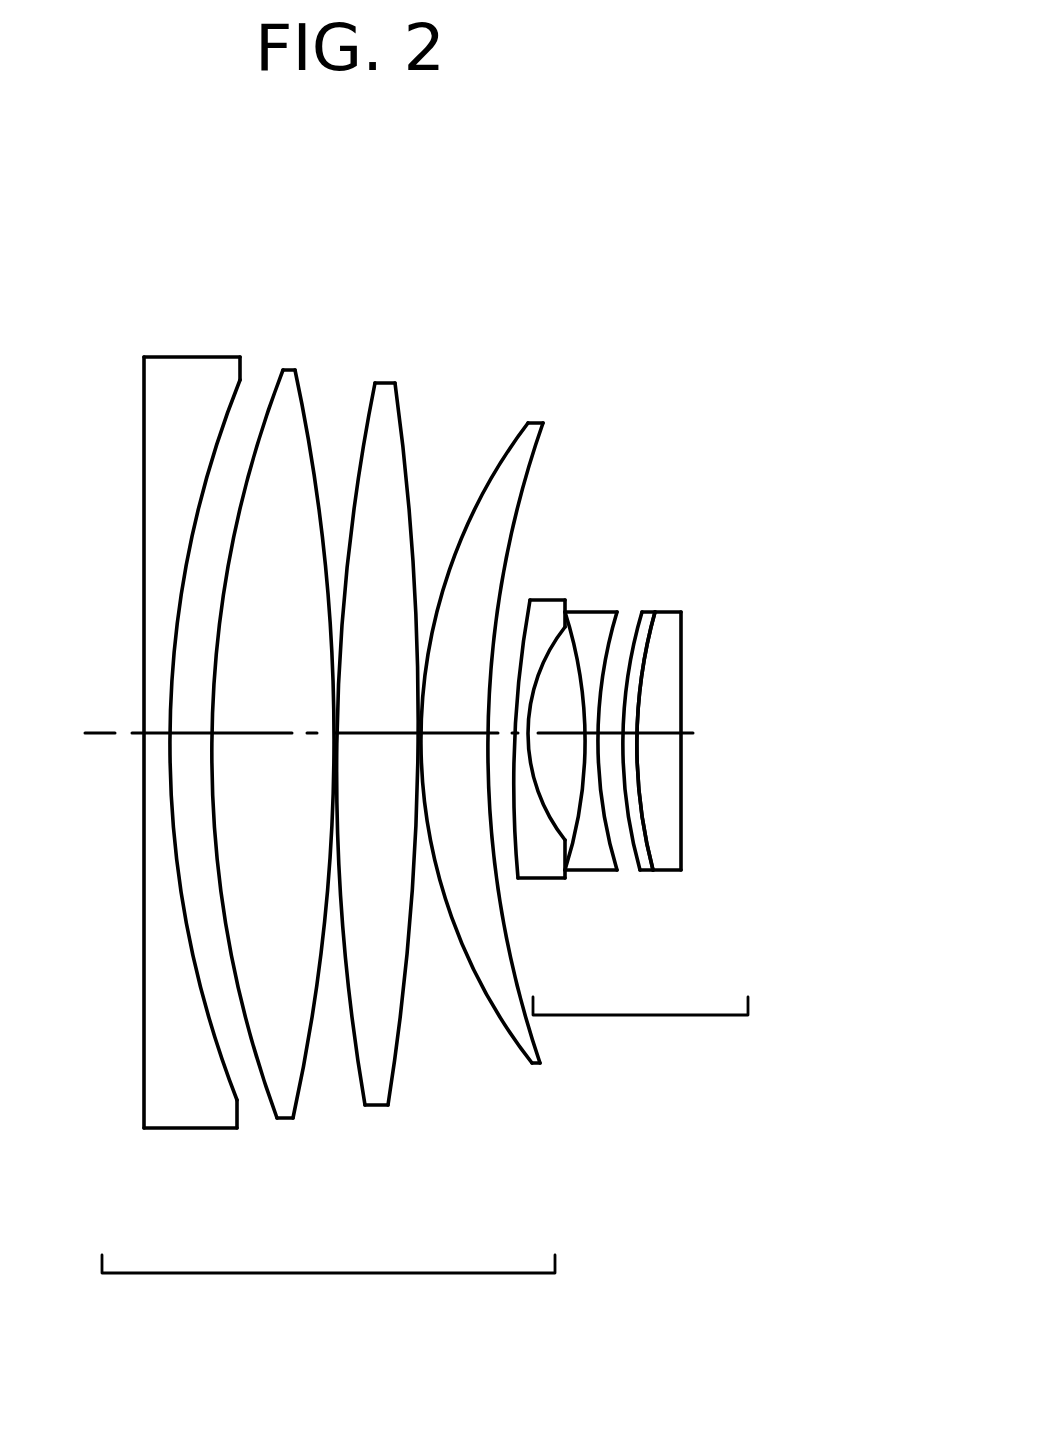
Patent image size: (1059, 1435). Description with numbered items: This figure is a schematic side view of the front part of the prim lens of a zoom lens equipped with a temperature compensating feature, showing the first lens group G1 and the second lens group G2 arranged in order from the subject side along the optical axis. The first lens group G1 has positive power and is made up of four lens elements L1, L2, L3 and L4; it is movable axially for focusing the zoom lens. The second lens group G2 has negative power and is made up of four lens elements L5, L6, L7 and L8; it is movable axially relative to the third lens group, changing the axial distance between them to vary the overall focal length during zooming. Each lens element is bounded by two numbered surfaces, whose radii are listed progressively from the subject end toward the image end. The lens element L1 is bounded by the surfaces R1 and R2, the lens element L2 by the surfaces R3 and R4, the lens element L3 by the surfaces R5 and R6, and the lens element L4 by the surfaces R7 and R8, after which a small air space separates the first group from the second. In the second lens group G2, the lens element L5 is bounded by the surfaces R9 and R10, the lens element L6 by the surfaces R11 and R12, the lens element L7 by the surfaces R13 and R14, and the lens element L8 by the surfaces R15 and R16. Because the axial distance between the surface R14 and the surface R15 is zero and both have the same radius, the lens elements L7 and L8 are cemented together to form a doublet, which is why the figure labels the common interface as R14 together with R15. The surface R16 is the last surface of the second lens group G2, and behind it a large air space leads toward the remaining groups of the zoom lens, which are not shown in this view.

The first lens group G1 is at (339, 792).
The second lens group G2 is at (708, 781).
The lens element L1 is at (166, 722).
The lens element L2 is at (284, 722).
The lens element L3 is at (403, 705).
The lens element L4 is at (507, 717).
The lens element L5 is at (562, 738).
The lens element L6 is at (650, 716).
The lens element L7 is at (713, 690).
The lens element L8 is at (770, 708).
The lens surface R1 is at (142, 1097).
The lens surface R2 is at (238, 1095).
The lens surface R3 is at (262, 1093).
The lens surface R4 is at (300, 1095).
The lens surface R5 is at (363, 1082).
The lens surface R6 is at (408, 1080).
The lens surface R7 is at (490, 1007).
The lens surface R8 is at (538, 1035).
The lens surface R9 is at (517, 863).
The lens surface R10 is at (567, 830).
The lens surface R11 is at (593, 870).
The lens surface R12 is at (613, 837).
The lens surface R13 is at (640, 830).
The lens surface R14 is at (650, 652).
The lens surface R15 is at (650, 652).
The lens surface R16 is at (683, 813).